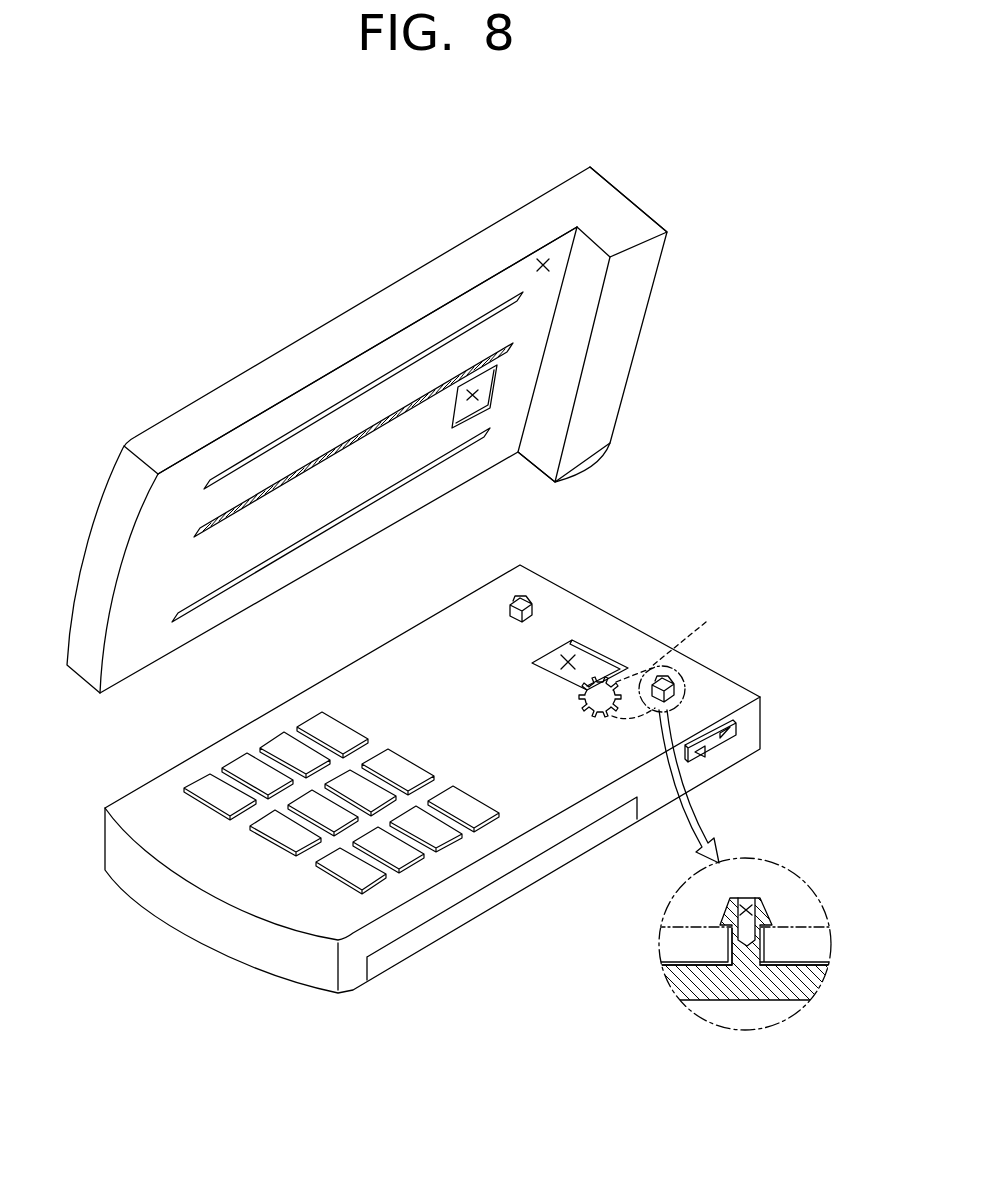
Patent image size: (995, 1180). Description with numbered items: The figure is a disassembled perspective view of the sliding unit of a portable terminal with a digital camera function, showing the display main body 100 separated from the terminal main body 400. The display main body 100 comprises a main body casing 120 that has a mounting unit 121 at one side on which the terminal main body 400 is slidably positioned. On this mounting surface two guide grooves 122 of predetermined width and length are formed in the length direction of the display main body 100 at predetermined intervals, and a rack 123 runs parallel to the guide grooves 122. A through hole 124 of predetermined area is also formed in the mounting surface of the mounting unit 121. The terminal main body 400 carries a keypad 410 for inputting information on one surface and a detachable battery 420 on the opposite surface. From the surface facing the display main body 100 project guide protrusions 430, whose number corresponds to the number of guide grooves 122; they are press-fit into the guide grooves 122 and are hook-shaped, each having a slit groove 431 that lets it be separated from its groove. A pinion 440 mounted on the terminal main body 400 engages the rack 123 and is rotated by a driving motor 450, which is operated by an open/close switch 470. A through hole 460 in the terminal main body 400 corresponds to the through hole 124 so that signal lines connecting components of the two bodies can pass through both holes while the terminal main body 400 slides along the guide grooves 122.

The display main body 100 is at (421, 251).
The main body casing 120 is at (312, 358).
The mounting unit 121 is at (546, 264).
The guide grooves 122 is at (520, 302).
The rack 123 is at (503, 350).
The through hole 124 is at (481, 396).
The terminal main body 400 is at (158, 769).
The keypad 410 is at (253, 737).
The battery 420 is at (432, 925).
The guide protrusions 430 is at (686, 669).
The slit groove 431 is at (745, 905).
The pinion 440 is at (612, 661).
The driving motor 450 is at (649, 657).
The through hole 460 is at (570, 655).
The open/close switch 470 is at (728, 742).